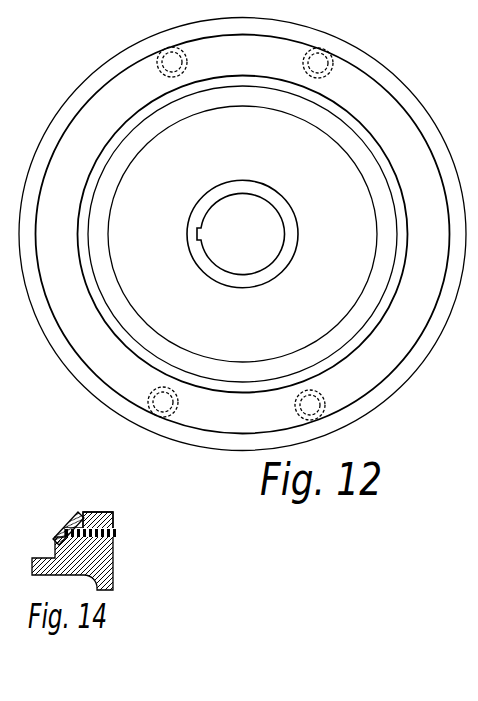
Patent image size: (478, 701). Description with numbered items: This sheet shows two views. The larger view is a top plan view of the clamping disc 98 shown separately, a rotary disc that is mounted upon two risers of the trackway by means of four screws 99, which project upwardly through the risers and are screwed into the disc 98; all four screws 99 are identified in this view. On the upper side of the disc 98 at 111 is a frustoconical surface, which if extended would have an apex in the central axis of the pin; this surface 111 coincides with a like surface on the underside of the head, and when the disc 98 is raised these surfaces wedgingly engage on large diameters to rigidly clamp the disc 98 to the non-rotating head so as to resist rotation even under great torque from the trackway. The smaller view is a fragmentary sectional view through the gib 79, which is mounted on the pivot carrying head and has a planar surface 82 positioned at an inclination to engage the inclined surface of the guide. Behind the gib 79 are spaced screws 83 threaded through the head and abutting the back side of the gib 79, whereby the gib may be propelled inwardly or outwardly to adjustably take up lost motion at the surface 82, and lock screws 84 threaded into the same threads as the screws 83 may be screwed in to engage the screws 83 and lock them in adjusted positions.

In FIG. 12, the clamping disc 98 is at (143, 423).
In FIG. 12, the screws 99 is at (303, 62).
In FIG. 12, the frustoconical surface 111 is at (82, 266).
In FIG. 14, the gib 79 is at (52, 543).
In FIG. 14, the planar surface 82 is at (70, 521).
In FIG. 14, the screws 83 is at (88, 528).
In FIG. 14, the lock screws 84 is at (116, 527).